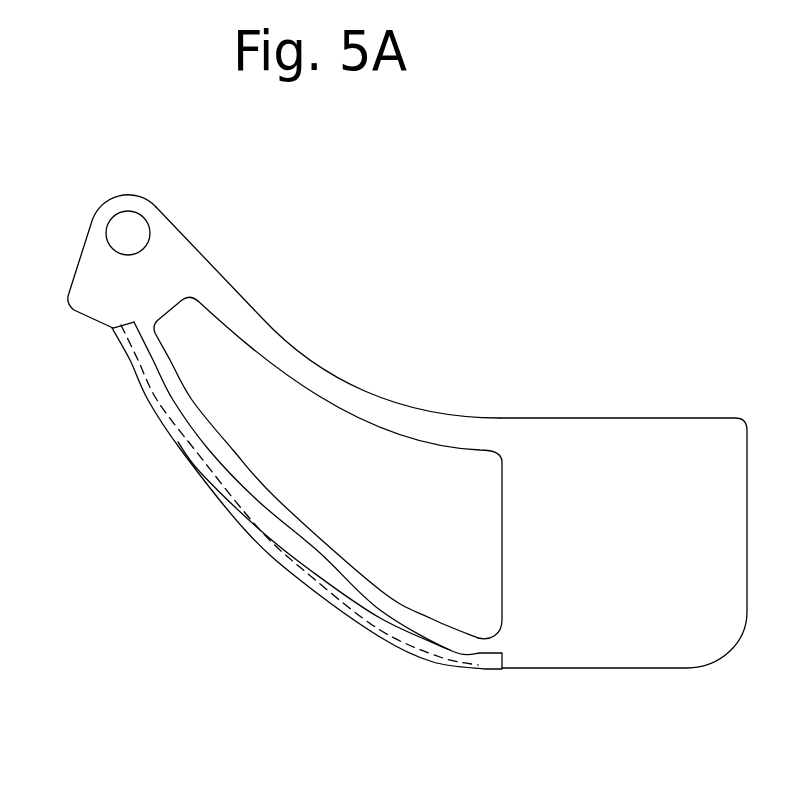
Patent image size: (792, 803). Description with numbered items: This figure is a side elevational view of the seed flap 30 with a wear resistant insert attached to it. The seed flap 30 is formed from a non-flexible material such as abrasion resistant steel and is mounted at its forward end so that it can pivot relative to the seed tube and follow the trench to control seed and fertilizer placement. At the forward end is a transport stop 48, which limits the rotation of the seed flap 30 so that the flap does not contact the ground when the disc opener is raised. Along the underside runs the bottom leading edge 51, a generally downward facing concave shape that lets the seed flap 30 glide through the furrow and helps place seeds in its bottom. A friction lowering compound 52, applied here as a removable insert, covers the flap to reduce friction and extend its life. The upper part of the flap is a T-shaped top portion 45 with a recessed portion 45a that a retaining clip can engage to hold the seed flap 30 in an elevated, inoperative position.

The seed flap 30 is at (655, 433).
The top portion 45 is at (372, 425).
The recessed portion 45a is at (213, 347).
The transport stop 48 is at (72, 312).
The bottom leading edge 51 is at (288, 613).
The friction lowering compound 52 is at (215, 490).